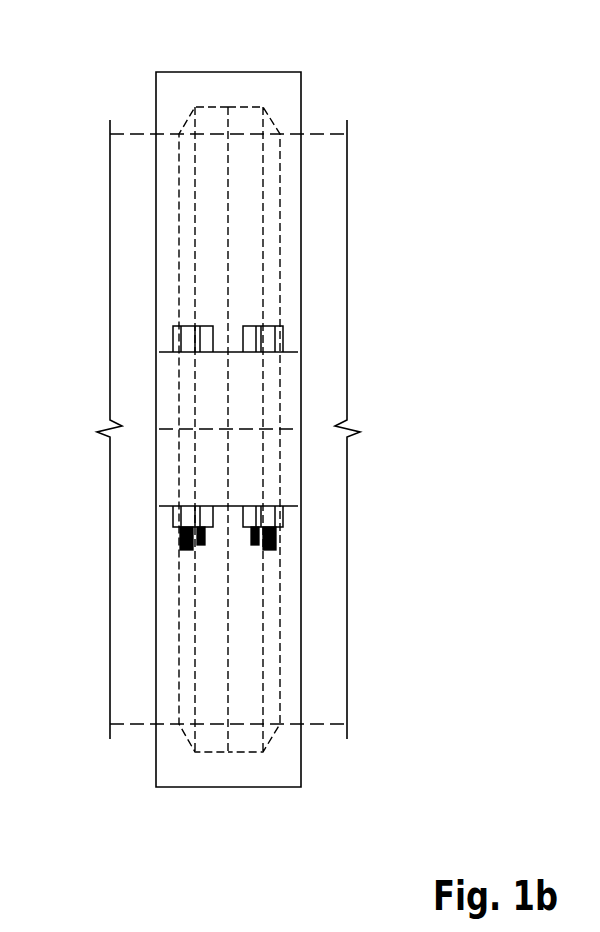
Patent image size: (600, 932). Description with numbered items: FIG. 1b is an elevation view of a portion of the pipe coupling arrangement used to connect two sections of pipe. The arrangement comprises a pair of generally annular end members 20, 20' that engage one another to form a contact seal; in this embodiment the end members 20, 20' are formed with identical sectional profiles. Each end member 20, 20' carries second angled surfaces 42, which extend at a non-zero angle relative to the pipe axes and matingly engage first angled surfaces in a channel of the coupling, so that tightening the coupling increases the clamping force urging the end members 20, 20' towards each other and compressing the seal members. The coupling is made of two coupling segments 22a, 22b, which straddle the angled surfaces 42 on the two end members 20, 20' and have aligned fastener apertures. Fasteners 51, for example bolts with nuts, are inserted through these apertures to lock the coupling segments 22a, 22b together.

The end member 20 is at (76, 402).
The end member 20' is at (383, 402).
The coupling segment 22a is at (283, 83).
The coupling segment 22b is at (283, 768).
The second angled surface 42 is at (183, 183).
The fastener 51 is at (168, 340).